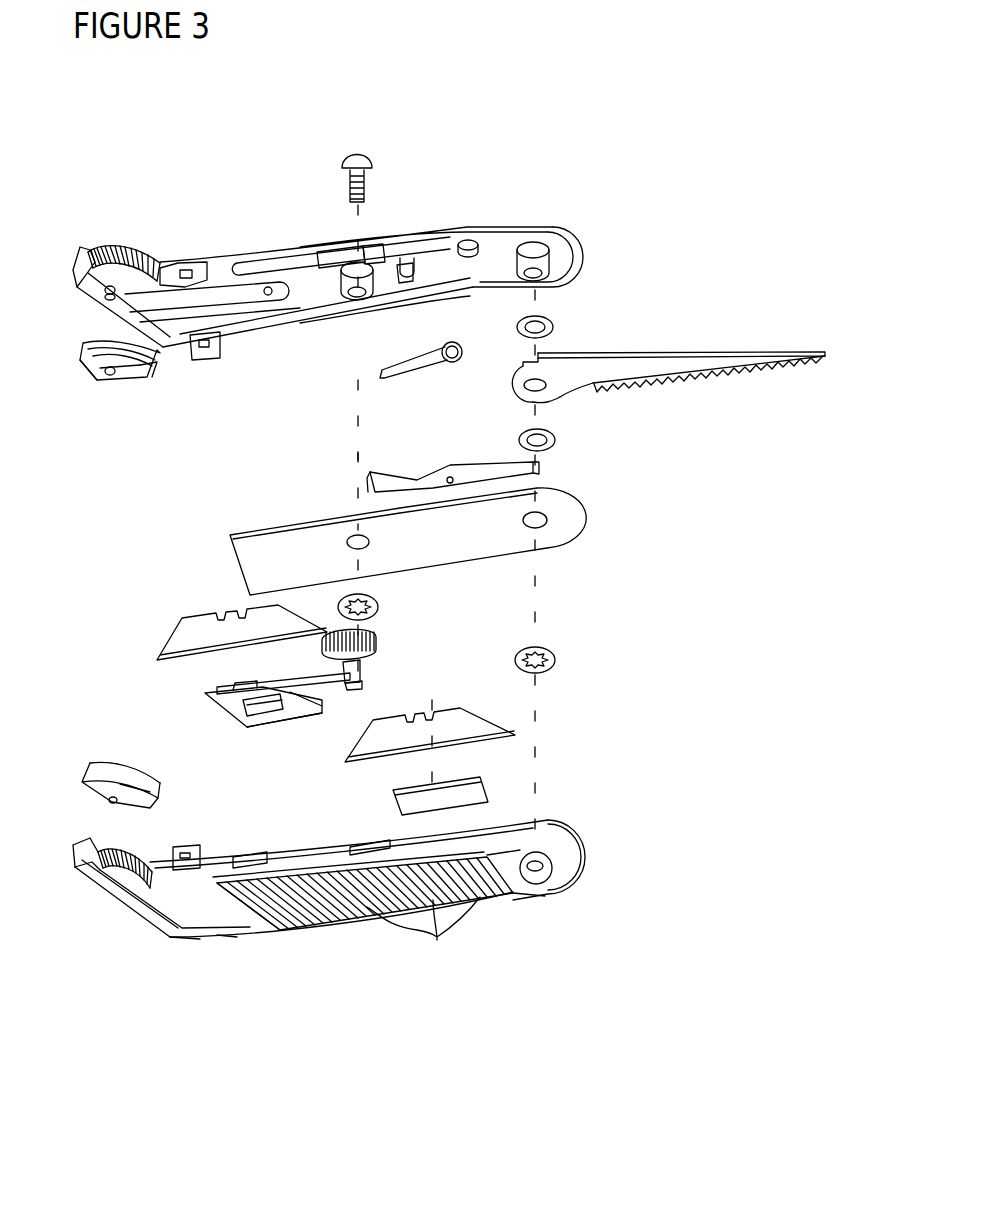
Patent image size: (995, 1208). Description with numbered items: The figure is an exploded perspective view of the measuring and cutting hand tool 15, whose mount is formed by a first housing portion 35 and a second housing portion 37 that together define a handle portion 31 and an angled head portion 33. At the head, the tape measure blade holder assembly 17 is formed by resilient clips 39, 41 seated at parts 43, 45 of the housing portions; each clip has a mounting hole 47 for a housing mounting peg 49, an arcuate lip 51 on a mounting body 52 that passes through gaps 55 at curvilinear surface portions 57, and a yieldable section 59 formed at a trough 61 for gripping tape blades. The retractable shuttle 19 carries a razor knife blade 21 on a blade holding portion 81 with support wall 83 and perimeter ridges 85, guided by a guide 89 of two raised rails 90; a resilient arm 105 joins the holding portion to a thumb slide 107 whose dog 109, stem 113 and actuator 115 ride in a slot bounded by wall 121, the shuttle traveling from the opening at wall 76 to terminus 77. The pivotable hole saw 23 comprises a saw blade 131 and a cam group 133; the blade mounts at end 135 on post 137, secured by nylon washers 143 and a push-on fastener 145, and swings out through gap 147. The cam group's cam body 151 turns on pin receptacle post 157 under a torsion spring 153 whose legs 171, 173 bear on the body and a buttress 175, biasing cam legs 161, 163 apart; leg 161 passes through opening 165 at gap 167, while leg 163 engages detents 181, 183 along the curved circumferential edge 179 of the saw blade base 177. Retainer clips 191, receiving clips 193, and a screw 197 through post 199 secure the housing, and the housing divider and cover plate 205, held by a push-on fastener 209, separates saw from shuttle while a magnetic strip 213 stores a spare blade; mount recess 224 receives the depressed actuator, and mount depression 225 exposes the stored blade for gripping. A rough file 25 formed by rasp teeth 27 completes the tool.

The measuring and cutting hand tool 15 is at (292, 964).
The tape measure blade holder assembly 17 is at (44, 362).
The retractable shuttle 19 is at (320, 716).
The razor knife blade 21 is at (178, 632).
The pivotable hole saw 23 is at (616, 420).
The rough file 25 is at (358, 915).
The rasp teeth 27 is at (437, 937).
The handle portion 31 is at (562, 228).
The angled head portion 33 is at (103, 242).
The first housing portion 35 is at (285, 246).
The second housing portion 37 is at (160, 930).
The resilient clip 39 is at (90, 341).
The resilient clip 41 is at (92, 765).
The part of housing portion 43 is at (78, 250).
The part of housing portion 45 is at (78, 868).
The mounting hole 47 is at (106, 376).
The housing mounting peg 49 is at (104, 287).
The arcuate lip 51 is at (128, 350).
The mounting body 52 is at (85, 368).
The gap 55 is at (90, 243).
The curvilinear surface portion 57 is at (130, 248).
The yieldable section 59 is at (122, 378).
The trough 61 is at (148, 375).
The wall 76 is at (117, 317).
The terminus 77 is at (355, 845).
The blade holding portion 81 is at (298, 718).
The support wall 83 is at (242, 725).
The perimeter ridges 85 is at (333, 700).
The guide 89 is at (270, 714).
The raised rail 90 is at (228, 710).
The resilient arm 105 is at (310, 678).
The thumb slide 107 is at (378, 645).
The dog 109 is at (362, 682).
The stem 113 is at (362, 665).
The actuator 115 is at (372, 633).
The wall 121 is at (250, 262).
The saw blade 131 is at (710, 322).
The cam group 133 is at (367, 418).
The end of handle portion 135 is at (585, 255).
The post 137 is at (533, 248).
The nylon washers 143 is at (545, 318).
The push-on fastener 145 is at (557, 660).
The gap 147 is at (373, 307).
The cam body 151 is at (420, 470).
The torsion spring 153 is at (452, 362).
The pin receptacle post 157 is at (468, 243).
The cam leg 161 is at (368, 480).
The cam leg 163 is at (540, 470).
The opening 165 is at (378, 248).
The gap 167 is at (366, 252).
The spring leg 171 is at (382, 372).
The spring leg 173 is at (418, 366).
The buttress 175 is at (407, 262).
The saw blade base 177 is at (512, 395).
The curved circumferential edge 179 is at (510, 382).
The detent 181 is at (527, 365).
The detent 183 is at (540, 405).
The retainer clip 191 is at (217, 358).
The receiving clip 193 is at (187, 265).
The screw 197 is at (347, 157).
The post 199 is at (327, 312).
The housing divider and cover plate 205 is at (590, 520).
The push-on fastener 209 is at (378, 605).
The magnetic strip 213 is at (485, 780).
The mount recess 224 is at (348, 252).
The mount depression 225 is at (440, 297).